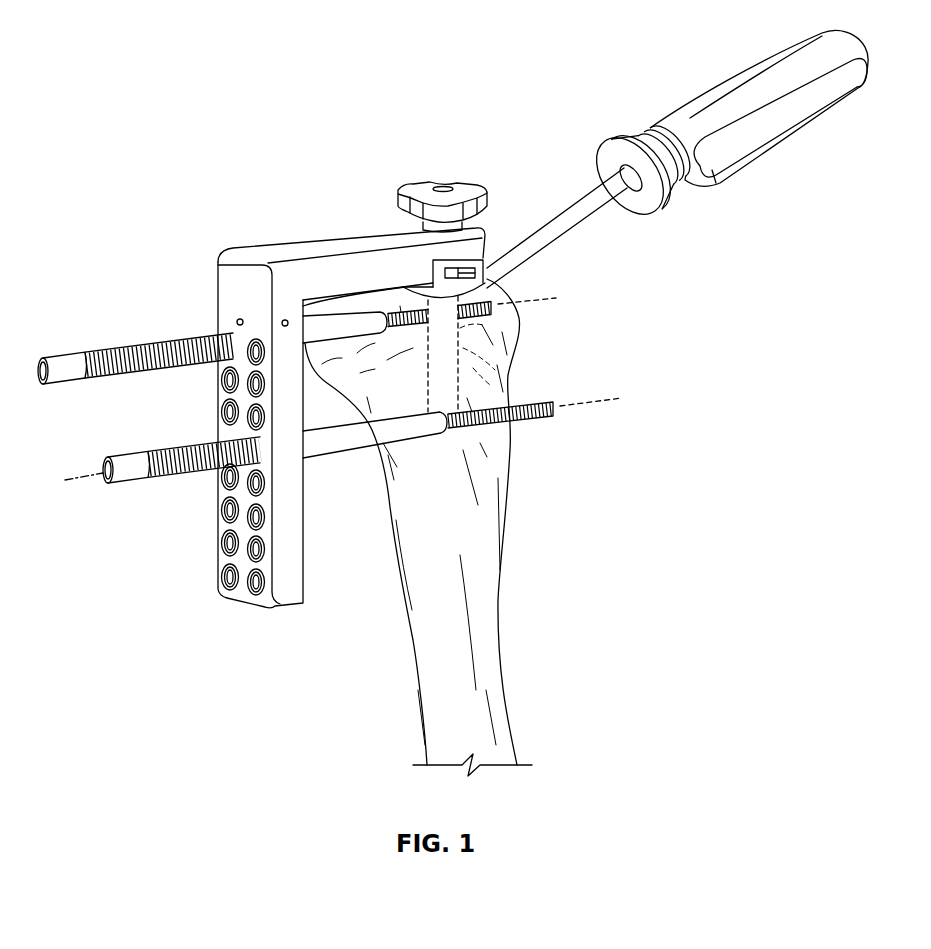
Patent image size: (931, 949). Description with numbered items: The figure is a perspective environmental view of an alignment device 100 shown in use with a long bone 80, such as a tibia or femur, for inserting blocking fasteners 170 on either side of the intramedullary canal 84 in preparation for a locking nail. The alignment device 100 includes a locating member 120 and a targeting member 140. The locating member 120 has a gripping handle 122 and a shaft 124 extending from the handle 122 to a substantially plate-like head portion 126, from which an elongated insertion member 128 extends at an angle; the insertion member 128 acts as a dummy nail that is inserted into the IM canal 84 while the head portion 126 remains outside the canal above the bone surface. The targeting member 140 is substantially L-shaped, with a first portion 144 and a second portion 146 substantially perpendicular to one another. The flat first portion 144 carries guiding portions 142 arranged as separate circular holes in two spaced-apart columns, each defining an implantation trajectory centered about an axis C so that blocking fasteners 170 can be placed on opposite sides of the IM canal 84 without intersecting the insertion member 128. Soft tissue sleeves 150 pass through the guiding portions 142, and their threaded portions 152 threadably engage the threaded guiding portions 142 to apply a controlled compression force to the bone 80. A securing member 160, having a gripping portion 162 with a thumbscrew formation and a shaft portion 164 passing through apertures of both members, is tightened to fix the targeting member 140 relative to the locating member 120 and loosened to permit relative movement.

The long bone 80 is at (491, 547).
The intramedullary canal 84 is at (488, 325).
The alignment device 100 is at (126, 172).
The locating member 120 is at (581, 176).
The gripping handle 122 is at (722, 103).
The shaft 124 is at (595, 208).
The head portion 126 is at (492, 282).
The insertion member 128 is at (500, 378).
The targeting member 140 is at (287, 229).
The guiding portions 142 is at (222, 541).
The first portion 144 is at (291, 553).
The second portion 146 is at (330, 270).
The soft tissue sleeves 150 is at (148, 388).
The threaded portions 152 is at (166, 340).
The securing member 160 is at (431, 172).
The gripping portion 162 is at (462, 186).
The shaft portion 164 is at (418, 222).
The blocking fasteners 170 is at (502, 308).
The axis C is at (34, 373).